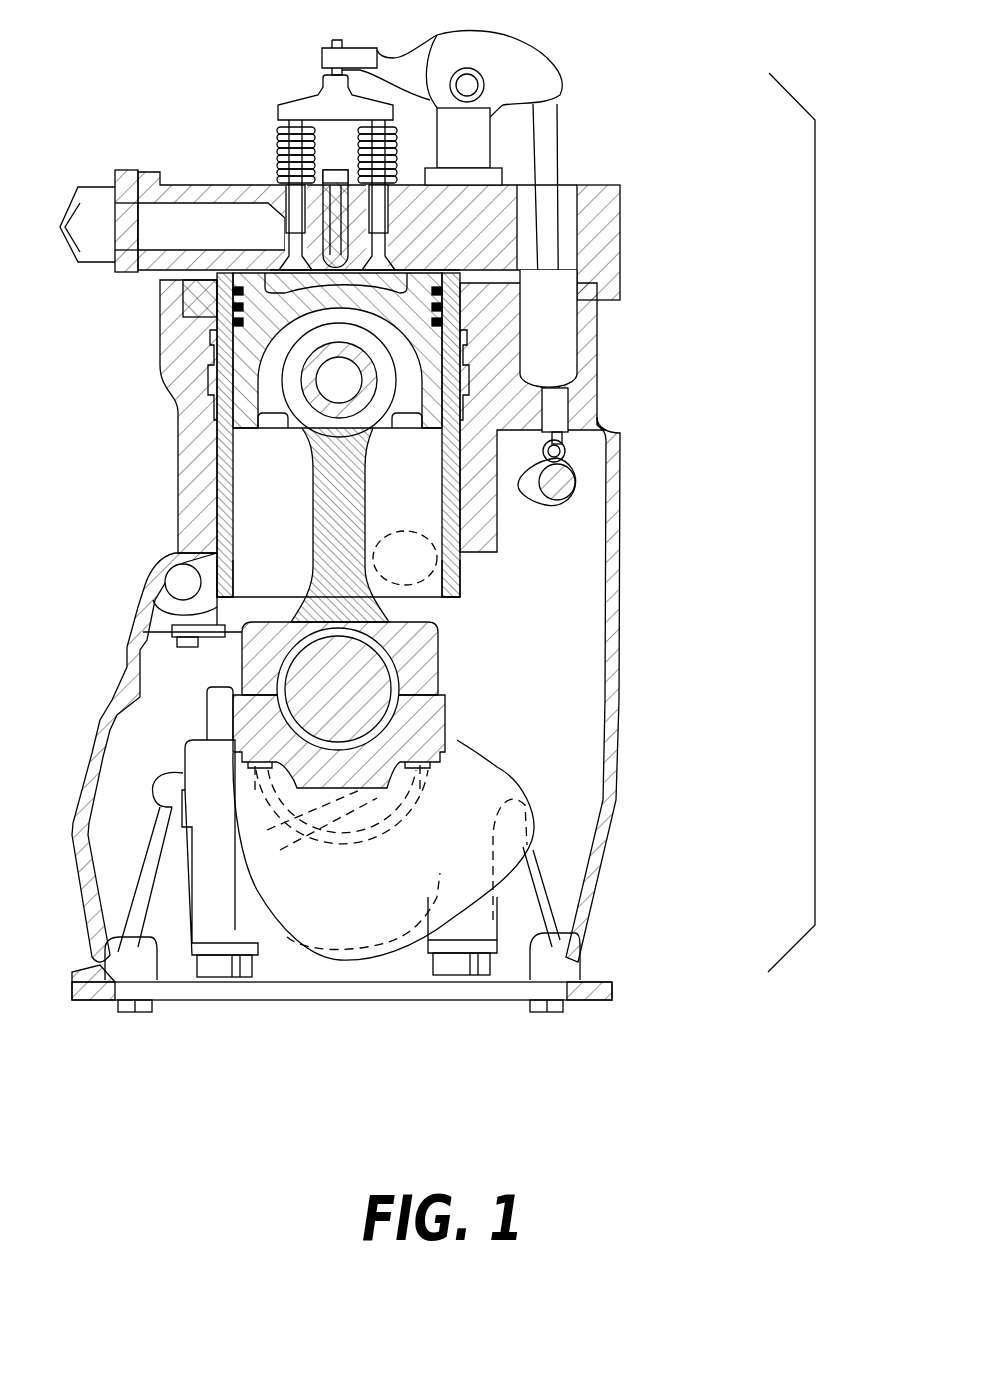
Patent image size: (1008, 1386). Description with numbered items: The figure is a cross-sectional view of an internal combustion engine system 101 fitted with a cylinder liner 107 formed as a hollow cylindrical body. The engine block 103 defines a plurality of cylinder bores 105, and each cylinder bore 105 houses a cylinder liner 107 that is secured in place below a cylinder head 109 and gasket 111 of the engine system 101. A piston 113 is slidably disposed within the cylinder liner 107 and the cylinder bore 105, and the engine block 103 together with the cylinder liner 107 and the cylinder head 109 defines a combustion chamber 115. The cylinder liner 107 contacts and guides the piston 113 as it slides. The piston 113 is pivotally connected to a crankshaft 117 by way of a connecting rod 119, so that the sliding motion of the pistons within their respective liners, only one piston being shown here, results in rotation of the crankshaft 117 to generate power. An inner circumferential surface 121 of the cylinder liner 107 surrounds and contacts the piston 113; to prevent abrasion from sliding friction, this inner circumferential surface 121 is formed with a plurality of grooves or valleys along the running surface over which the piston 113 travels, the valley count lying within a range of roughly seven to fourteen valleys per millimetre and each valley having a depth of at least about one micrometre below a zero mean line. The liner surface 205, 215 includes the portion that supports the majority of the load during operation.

The internal combustion engine system 101 is at (815, 520).
The engine block 103 is at (513, 410).
The cylinder bore 105 is at (459, 552).
The cylinder liner 107 is at (452, 593).
The cylinder head 109 is at (503, 193).
The gasket 111 is at (503, 277).
The piston 113 is at (262, 335).
The combustion chamber 115 is at (275, 278).
The crankshaft 117 is at (300, 672).
The connecting rod 119 is at (153, 600).
The inner circumferential surface 121 is at (237, 498).
The surface 205 is at (433, 573).
The surface 215 is at (433, 573).